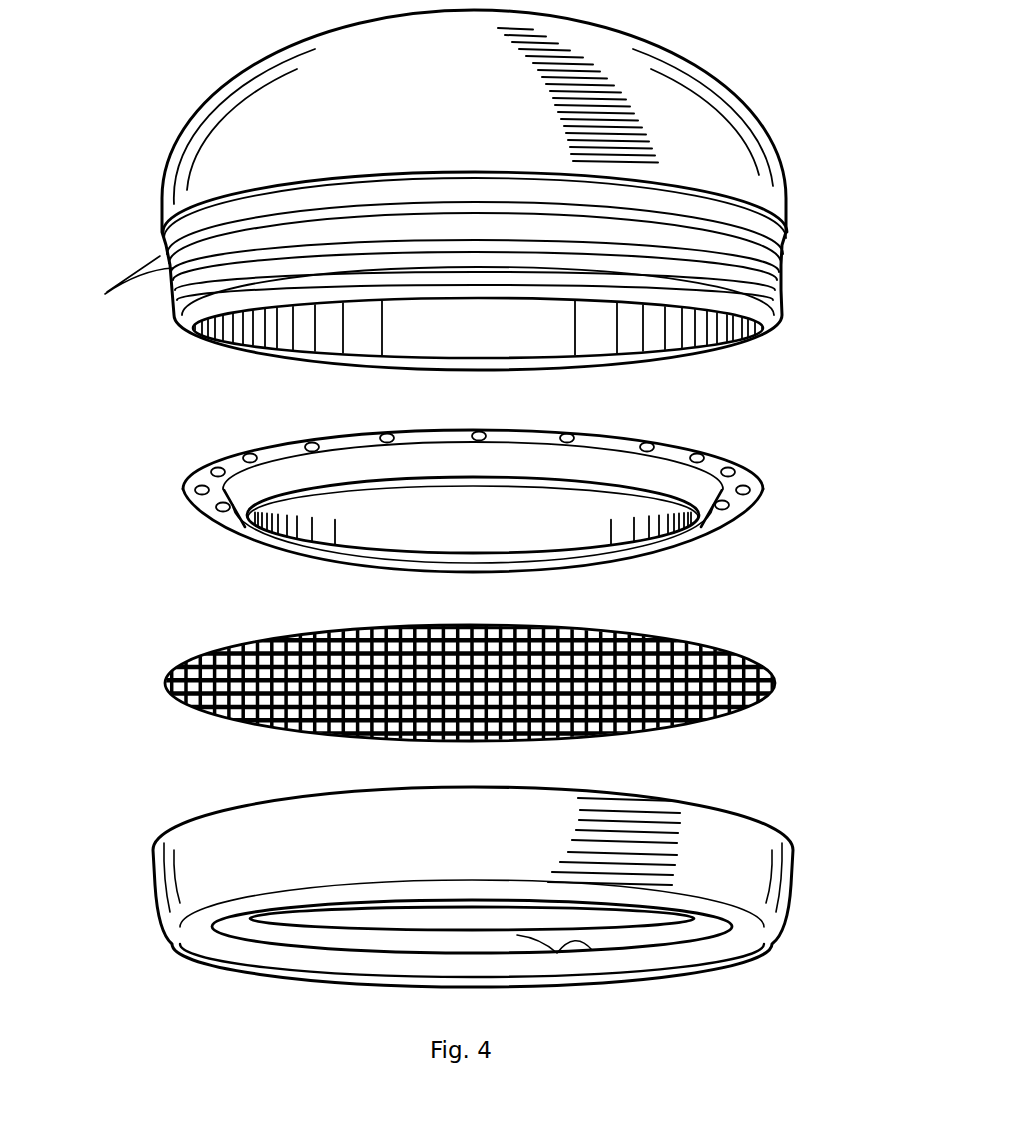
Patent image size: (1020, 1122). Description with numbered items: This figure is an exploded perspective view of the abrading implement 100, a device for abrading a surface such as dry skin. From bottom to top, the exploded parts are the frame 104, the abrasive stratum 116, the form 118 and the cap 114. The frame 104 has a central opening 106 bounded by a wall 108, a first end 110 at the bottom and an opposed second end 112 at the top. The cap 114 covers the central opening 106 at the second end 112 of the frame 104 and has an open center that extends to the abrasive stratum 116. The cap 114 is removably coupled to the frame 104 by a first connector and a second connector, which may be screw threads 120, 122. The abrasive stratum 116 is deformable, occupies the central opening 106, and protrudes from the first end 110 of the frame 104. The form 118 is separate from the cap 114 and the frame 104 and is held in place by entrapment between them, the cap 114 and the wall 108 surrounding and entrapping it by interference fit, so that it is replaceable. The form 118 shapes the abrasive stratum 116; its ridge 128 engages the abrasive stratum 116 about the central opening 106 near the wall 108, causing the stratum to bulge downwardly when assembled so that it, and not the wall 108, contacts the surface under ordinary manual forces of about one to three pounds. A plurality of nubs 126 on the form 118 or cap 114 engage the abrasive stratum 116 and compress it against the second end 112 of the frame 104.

The abrading implement 100 is at (806, 45).
The frame 104 is at (837, 869).
The central opening 106 is at (320, 957).
The wall 108 is at (492, 842).
The first end 110 is at (174, 986).
The second end 112 is at (157, 810).
The cap 114 is at (160, 107).
The abrasive stratum 116 is at (124, 669).
The form 118 is at (117, 471).
The screw threads 120 is at (547, 913).
The screw threads 122 is at (107, 292).
The nubs 126 is at (223, 510).
The ridge 128 is at (593, 557).